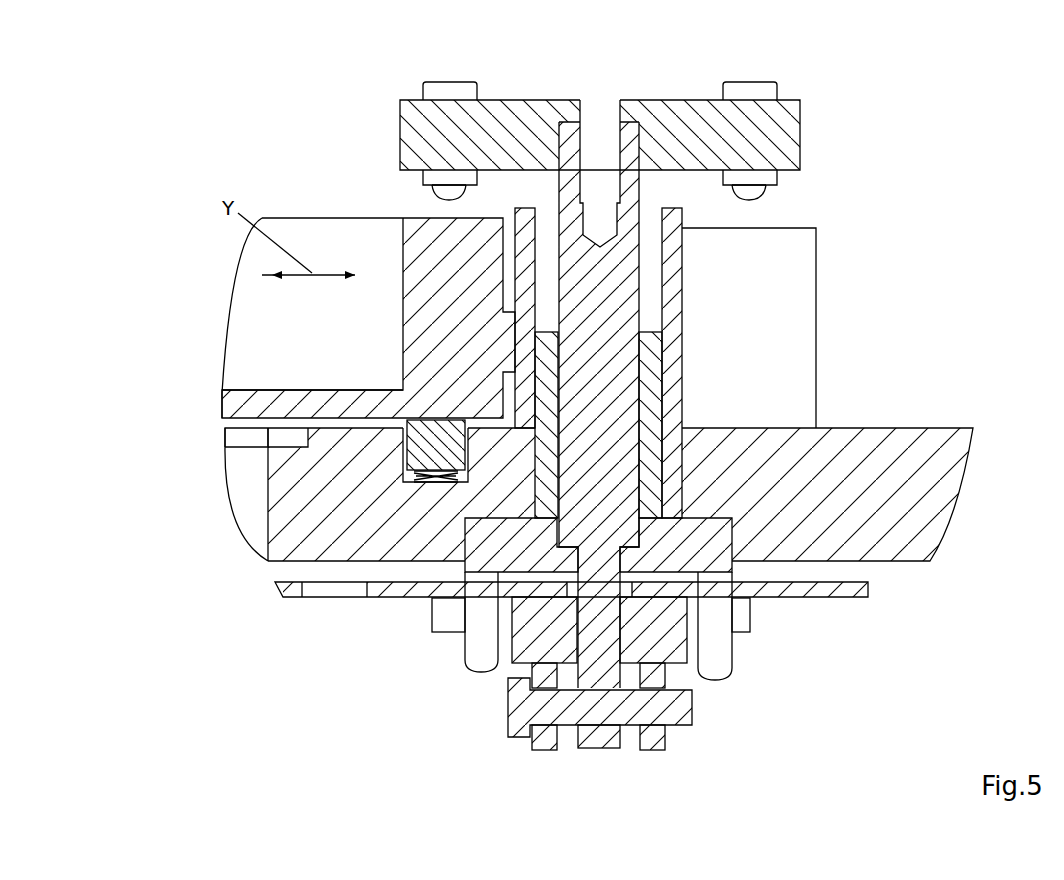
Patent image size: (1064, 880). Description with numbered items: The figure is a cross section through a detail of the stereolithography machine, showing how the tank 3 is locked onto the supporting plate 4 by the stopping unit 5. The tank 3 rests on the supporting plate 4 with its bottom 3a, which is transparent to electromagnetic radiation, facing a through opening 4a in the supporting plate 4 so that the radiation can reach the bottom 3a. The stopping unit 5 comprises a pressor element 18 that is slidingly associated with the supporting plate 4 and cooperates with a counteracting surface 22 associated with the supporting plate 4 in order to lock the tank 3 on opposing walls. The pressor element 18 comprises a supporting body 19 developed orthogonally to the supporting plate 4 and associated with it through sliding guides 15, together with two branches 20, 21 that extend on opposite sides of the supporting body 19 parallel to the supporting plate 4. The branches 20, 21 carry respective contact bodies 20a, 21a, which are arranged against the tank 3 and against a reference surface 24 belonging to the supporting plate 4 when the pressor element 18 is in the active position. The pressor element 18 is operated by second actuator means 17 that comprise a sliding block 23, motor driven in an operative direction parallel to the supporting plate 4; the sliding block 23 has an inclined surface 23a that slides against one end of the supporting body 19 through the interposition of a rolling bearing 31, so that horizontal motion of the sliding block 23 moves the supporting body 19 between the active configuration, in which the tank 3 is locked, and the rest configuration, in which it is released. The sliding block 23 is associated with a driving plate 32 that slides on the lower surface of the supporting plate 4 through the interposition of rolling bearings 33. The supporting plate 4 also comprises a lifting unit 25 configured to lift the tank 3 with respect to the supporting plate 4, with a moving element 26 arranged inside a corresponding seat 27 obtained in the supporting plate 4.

The tank 3 is at (296, 200).
The bottom of the tank 3a is at (257, 387).
The supporting plate 4 is at (305, 543).
The through opening 4a is at (228, 447).
The stopping unit 5 is at (820, 98).
The sliding guides 15 is at (557, 447).
The second actuator means 17 is at (485, 742).
The pressor element 18 is at (660, 96).
The supporting body 19 is at (607, 303).
The branch 20 is at (460, 68).
The contact body 20a is at (438, 185).
The branch 21 is at (771, 78).
The contact body 21a is at (757, 185).
The counteracting surface 22 is at (318, 432).
The sliding block 23 is at (495, 680).
The inclined surface 23a is at (683, 667).
The reference surface 24 is at (815, 225).
The lifting unit 25 is at (432, 445).
The moving element 26 is at (409, 498).
The seat 27 is at (395, 489).
The rolling bearing 31 is at (547, 762).
The driving plate 32 is at (826, 586).
The rolling bearings 33 is at (713, 652).